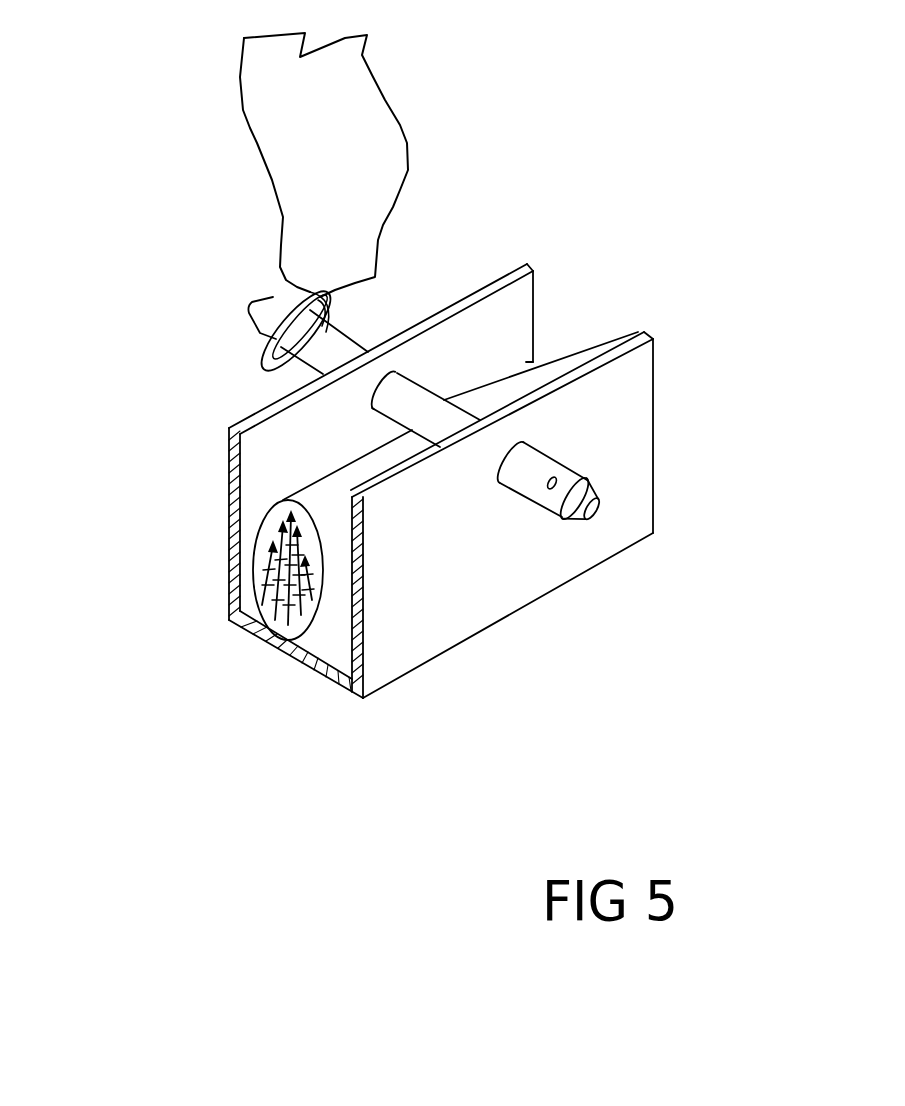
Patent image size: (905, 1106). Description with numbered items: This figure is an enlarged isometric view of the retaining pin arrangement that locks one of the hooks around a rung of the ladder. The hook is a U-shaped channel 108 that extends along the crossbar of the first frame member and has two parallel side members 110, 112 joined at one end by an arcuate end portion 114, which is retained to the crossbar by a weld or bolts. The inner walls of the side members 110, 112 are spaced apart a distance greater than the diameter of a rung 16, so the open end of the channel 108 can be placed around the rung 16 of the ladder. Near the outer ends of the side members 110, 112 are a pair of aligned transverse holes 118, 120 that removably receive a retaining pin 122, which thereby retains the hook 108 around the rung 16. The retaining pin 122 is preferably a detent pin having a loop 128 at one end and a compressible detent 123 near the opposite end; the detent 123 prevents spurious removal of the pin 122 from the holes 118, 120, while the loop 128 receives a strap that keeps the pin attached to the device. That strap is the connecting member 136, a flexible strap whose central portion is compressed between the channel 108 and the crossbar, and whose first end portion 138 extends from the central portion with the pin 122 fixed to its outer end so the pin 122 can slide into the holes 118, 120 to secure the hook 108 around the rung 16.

The rung 16 is at (267, 573).
The U-shaped channel or hook 108 is at (454, 524).
The side member 110 is at (228, 447).
The side member 112 is at (633, 413).
The arcuate end portion 114 is at (293, 657).
The transverse hole 118 is at (397, 373).
The transverse hole 120 is at (507, 492).
The retaining pin 122 is at (420, 400).
The detent 123 is at (558, 481).
The ring 128 is at (258, 349).
The connecting member 136 is at (392, 93).
The first end portion 138 is at (240, 107).